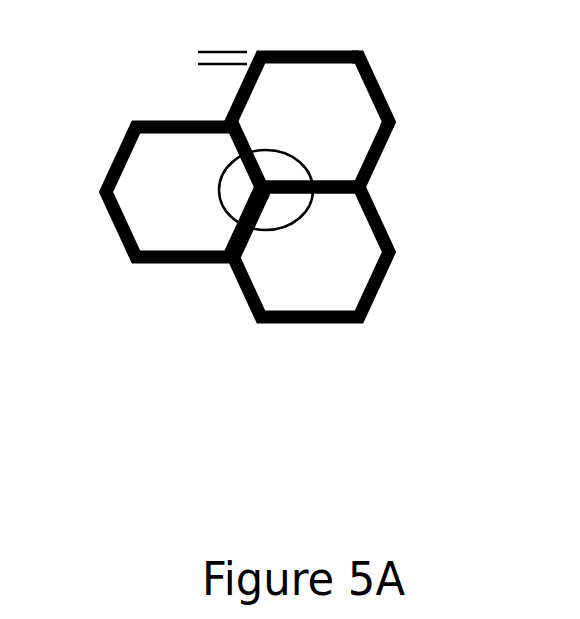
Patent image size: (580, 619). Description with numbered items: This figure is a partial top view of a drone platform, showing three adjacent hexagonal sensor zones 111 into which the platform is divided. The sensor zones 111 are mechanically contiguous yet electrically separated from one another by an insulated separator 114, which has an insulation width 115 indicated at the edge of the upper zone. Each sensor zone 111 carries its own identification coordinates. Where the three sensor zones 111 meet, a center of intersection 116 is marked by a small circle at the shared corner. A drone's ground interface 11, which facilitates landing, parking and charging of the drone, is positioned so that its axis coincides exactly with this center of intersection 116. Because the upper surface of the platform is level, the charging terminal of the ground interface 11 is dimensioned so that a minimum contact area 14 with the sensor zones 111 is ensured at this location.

The ground interface 11 is at (220, 175).
The sensor zone 111 is at (285, 284).
The minimum contact area 14 is at (283, 165).
The insulated separator 114 is at (377, 88).
The insulation width 115 is at (198, 57).
The center of intersection 116 is at (263, 195).